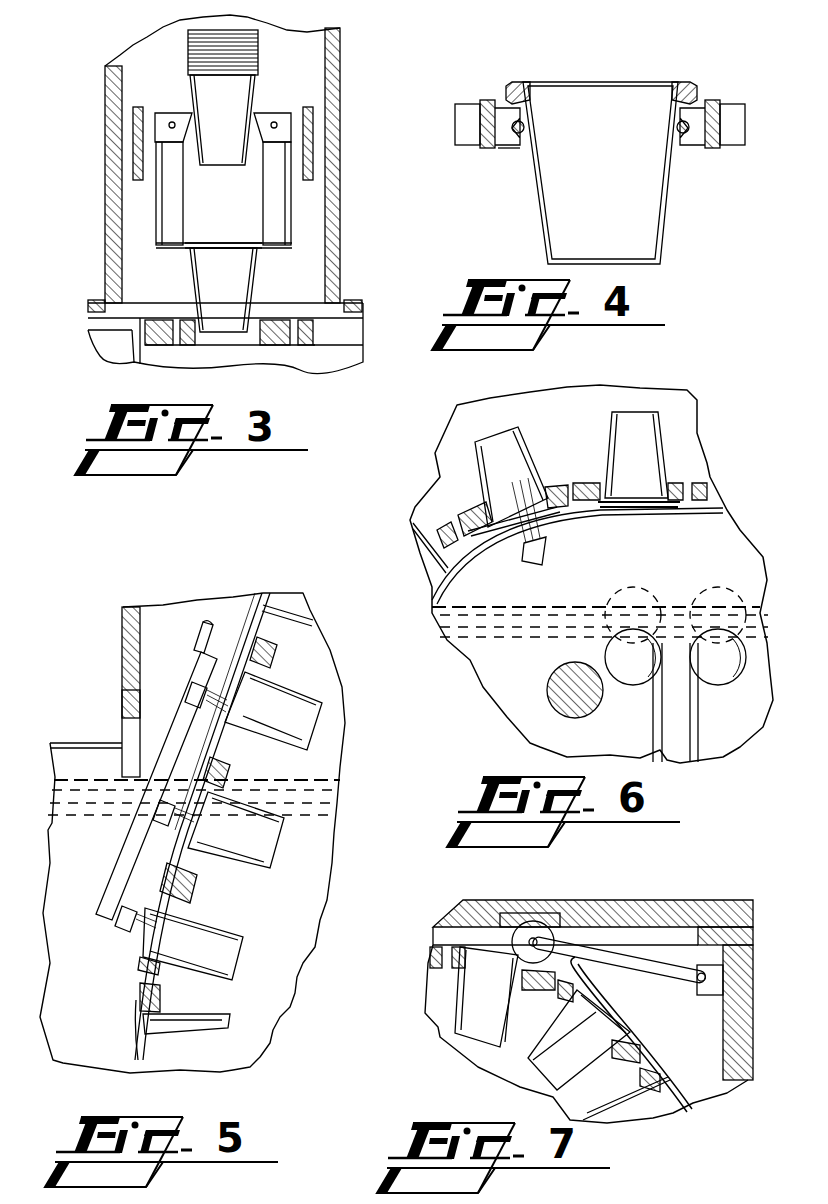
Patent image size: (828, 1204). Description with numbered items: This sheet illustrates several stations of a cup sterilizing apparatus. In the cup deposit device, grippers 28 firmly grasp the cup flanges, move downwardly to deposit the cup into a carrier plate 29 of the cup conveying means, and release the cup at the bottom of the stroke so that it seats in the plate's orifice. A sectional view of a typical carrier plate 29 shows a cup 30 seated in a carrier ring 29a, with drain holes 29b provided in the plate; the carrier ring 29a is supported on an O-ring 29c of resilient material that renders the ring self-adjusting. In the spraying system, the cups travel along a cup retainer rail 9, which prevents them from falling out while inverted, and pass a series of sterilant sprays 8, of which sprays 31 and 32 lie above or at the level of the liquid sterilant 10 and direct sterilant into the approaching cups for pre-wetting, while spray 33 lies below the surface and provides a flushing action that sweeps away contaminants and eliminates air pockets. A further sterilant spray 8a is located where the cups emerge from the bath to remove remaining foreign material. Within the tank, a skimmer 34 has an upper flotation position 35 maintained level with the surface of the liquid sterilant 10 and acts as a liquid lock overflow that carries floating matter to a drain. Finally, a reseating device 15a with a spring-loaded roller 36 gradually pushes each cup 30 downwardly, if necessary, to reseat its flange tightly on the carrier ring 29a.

In FIG. 3, the grippers 28 is at (262, 248).
In FIG. 3, the carrier plate 29 is at (270, 326).
In FIG. 4, the carrier plate 29 is at (486, 98).
In FIG. 7, the carrier plate 29 is at (458, 948).
In FIG. 7, the carrier ring 29a is at (622, 1058).
In FIG. 4, the drain holes 29b is at (502, 150).
In FIG. 4, the O-ring 29c is at (530, 128).
In FIG. 4, the cup 30 is at (677, 85).
In FIG. 7, the cup 30 is at (538, 1068).
In FIG. 5, the sterilant sprays 8 is at (186, 680).
In FIG. 6, the sterilant spray 8a is at (540, 549).
In FIG. 5, the cup retainer rail 9 is at (128, 1022).
In FIG. 6, the liquid sterilant 10 is at (488, 606).
In FIG. 5, the liquid sterilant 10 is at (325, 780).
In FIG. 5, the sterilant spray 31 is at (218, 668).
In FIG. 5, the sterilant spray 32 is at (170, 800).
In FIG. 5, the sterilant spray 33 is at (130, 906).
In FIG. 6, the skimmer 34 is at (698, 738).
In FIG. 6, the upper flotation position 35 is at (718, 585).
In FIG. 7, the spring-loaded roller 36 is at (535, 934).
In FIG. 7, the reseating device 15a is at (675, 976).